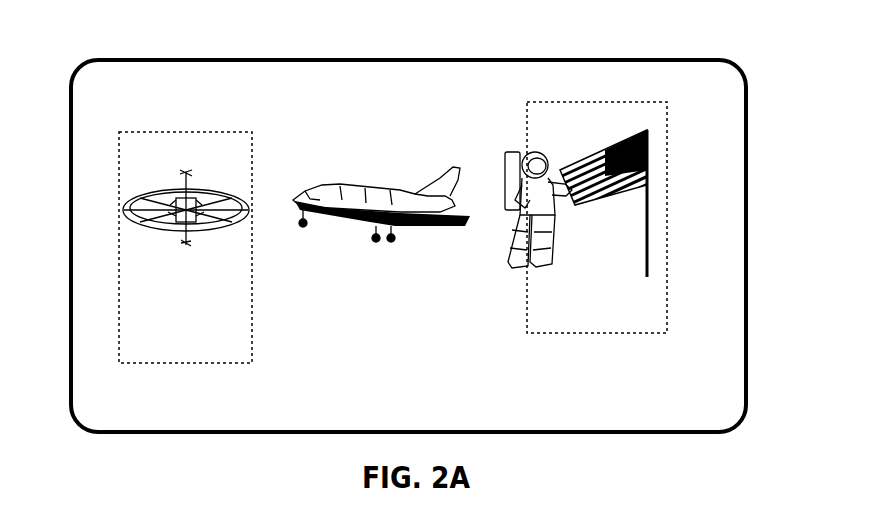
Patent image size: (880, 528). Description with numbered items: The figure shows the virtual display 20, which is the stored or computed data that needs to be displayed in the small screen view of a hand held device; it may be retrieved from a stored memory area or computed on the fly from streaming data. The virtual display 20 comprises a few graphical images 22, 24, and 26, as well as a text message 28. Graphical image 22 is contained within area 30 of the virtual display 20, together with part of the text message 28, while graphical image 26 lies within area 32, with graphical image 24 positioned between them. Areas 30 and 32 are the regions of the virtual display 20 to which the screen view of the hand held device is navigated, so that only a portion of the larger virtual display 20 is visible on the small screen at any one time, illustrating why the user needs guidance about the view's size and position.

The virtual display 20 is at (104, 114).
The graphical image 22 is at (222, 190).
The graphical image 24 is at (512, 150).
The graphical image 26 is at (650, 168).
The text message 28 is at (383, 320).
The area of the virtual display 30 is at (118, 262).
The area of the virtual display 32 is at (667, 230).